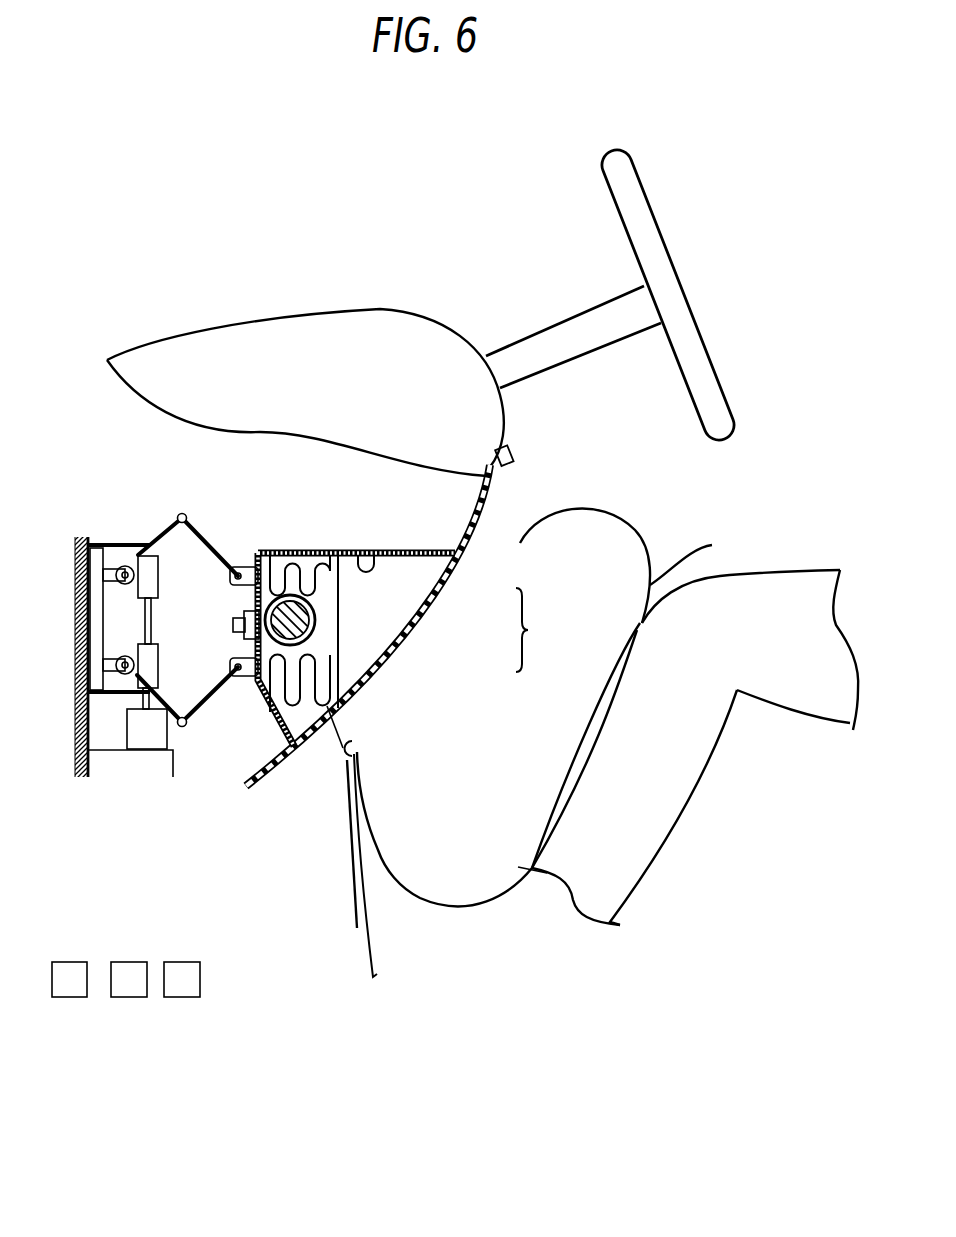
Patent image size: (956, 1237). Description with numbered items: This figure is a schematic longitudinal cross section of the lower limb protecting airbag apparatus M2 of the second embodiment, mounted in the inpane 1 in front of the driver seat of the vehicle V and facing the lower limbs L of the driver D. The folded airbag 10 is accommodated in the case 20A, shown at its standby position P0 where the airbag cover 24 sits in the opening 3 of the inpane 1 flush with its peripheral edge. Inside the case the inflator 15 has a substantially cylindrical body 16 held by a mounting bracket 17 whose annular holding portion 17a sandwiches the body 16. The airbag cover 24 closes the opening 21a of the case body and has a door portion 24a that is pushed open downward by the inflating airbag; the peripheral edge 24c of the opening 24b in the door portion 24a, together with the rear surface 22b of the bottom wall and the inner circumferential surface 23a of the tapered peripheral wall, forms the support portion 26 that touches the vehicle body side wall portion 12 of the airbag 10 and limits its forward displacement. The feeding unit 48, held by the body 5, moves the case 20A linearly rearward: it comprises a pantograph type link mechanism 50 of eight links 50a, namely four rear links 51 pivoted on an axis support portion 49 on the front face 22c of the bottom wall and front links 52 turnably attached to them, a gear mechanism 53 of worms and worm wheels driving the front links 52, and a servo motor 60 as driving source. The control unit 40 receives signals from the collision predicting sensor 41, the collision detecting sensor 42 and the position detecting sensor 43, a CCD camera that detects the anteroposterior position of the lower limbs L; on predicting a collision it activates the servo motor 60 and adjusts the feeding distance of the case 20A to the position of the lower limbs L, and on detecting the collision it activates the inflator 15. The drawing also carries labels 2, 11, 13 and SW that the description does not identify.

The inpane 1 is at (305, 327).
The airbag device 2 is at (515, 497).
The opening 3 is at (452, 550).
The body 5 is at (78, 538).
The airbag 10 is at (345, 655).
The neck 11 is at (710, 545).
The vehicle body side wall portion 12 is at (545, 510).
The retainer 13 is at (275, 600).
The inflator 15 is at (408, 634).
The body 16 is at (313, 610).
The mounting bracket 17 is at (394, 634).
The annular holding portion 17a is at (313, 626).
The case 20A is at (344, 437).
The standby position P0 is at (300, 478).
The opening 21a is at (372, 735).
The rear surface 22b is at (243, 680).
The front face 22c is at (250, 565).
The inner circumferential surface 23a is at (366, 553).
The airbag cover 24 is at (300, 777).
The door portion 24a is at (318, 735).
The opening 24b is at (451, 856).
The peripheral edge 24c is at (368, 757).
The support portion 26 is at (399, 532).
The control unit 40 is at (68, 998).
The collision predicting sensor 41 is at (128, 998).
The collision detecting sensor 42 is at (181, 998).
The position detecting sensor 43 is at (514, 448).
The feeding unit 48 is at (222, 522).
The axis support portion 49 is at (244, 588).
The link mechanism 50 is at (181, 510).
The links 50a is at (161, 652).
The rear links 51 is at (203, 525).
The front links 52 is at (161, 652).
The gear mechanism 53 is at (167, 668).
The servo motor 60 is at (130, 728).
The driver D is at (802, 728).
The lower limbs L is at (678, 805).
The lower limb protecting airbag apparatus M2 is at (122, 858).
The steering wheel SW is at (672, 210).
The vehicle V is at (350, 265).